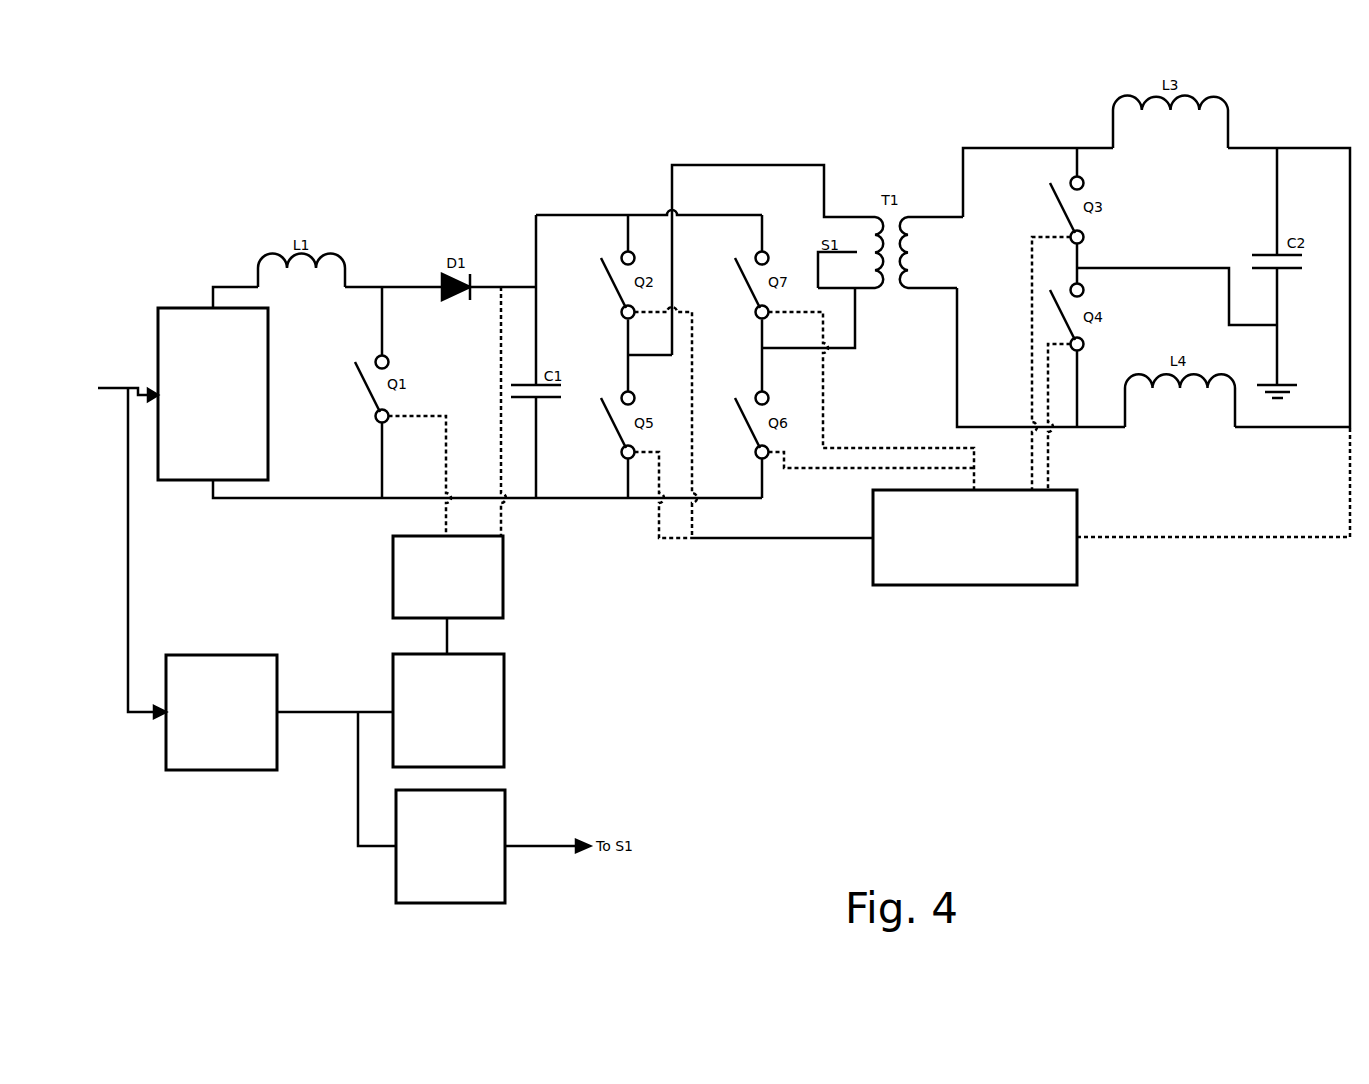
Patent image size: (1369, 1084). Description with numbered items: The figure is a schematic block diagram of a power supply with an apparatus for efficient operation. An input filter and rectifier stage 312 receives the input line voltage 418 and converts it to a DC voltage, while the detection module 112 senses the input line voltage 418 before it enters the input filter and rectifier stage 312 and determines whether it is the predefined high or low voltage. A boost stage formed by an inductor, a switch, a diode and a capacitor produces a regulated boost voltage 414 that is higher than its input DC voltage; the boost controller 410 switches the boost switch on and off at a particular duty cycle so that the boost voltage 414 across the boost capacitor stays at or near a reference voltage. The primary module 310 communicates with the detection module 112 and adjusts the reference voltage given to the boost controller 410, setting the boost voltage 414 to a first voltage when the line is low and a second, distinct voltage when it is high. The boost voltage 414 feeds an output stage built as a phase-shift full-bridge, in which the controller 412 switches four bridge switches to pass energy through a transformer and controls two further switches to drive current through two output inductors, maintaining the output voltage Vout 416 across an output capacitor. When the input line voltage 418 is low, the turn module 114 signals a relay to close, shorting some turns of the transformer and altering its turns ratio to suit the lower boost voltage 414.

The input filter and rectifier stage 312 is at (213, 394).
The boost controller 410 is at (448, 577).
The primary module 310 is at (448, 710).
The detection module 112 is at (221, 712).
The turn module 114 is at (450, 846).
The controller 412 is at (975, 537).
The boost voltage 414 is at (536, 215).
The output voltage Vout 416 is at (1283, 148).
The input line voltage 418 is at (110, 388).